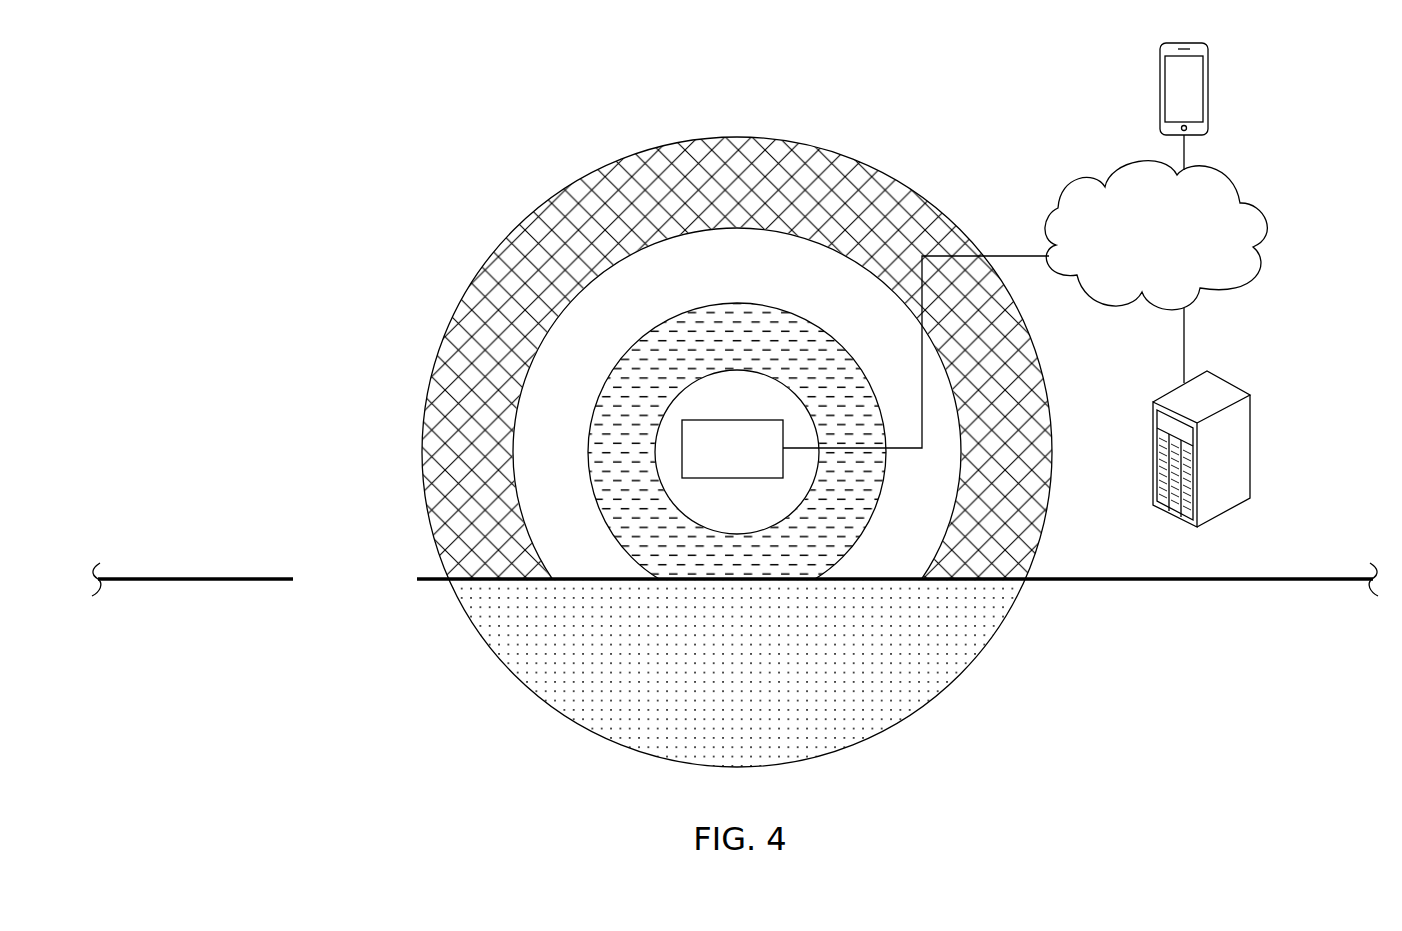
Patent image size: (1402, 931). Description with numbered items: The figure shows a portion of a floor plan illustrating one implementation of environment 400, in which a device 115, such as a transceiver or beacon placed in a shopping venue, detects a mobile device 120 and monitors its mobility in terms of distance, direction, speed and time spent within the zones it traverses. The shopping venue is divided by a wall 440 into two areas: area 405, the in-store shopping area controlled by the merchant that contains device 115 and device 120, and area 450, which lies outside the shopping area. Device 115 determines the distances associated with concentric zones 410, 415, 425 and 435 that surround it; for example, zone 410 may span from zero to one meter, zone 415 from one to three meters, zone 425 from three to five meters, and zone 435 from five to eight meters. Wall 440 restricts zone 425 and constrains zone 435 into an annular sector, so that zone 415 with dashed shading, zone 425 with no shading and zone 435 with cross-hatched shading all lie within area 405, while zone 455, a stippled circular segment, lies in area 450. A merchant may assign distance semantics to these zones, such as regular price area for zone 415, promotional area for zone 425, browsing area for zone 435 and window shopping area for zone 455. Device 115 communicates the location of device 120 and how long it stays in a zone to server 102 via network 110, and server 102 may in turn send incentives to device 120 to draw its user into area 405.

The environment 400 is at (298, 131).
The area 405 is at (263, 338).
The zone 410 is at (714, 514).
The zone 415 is at (714, 354).
The zone 425 is at (714, 283).
The zone 435 is at (714, 201).
The wall 440 is at (207, 578).
The area 450 is at (1149, 698).
The zone 455 is at (714, 696).
The server 102 is at (1252, 445).
The network 110 is at (1137, 274).
The device 115 is at (713, 472).
The device 120 is at (1212, 86).